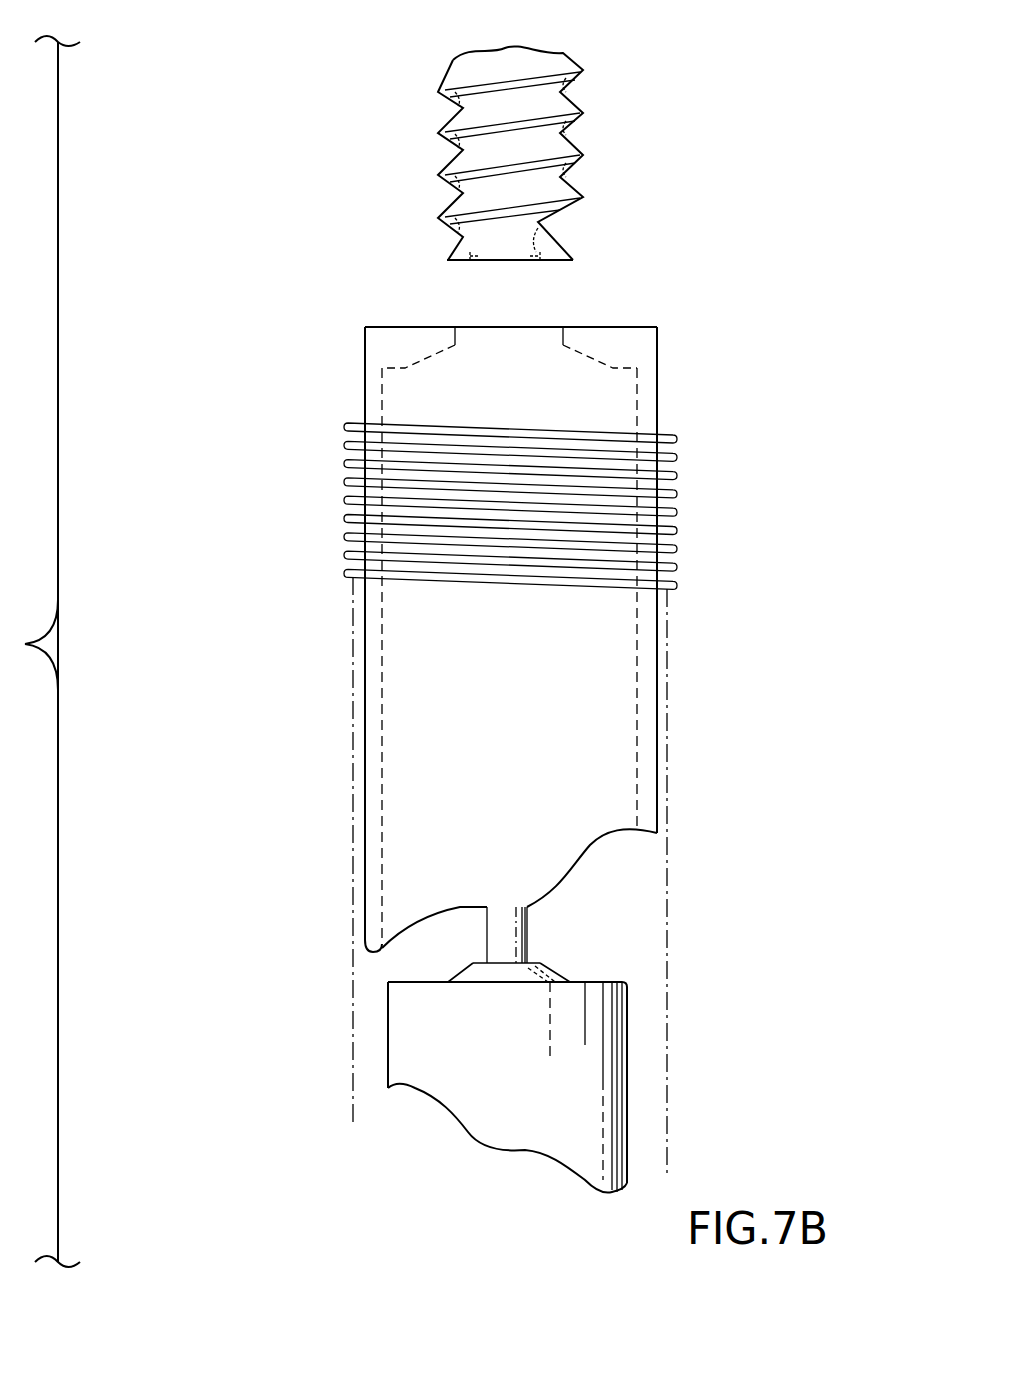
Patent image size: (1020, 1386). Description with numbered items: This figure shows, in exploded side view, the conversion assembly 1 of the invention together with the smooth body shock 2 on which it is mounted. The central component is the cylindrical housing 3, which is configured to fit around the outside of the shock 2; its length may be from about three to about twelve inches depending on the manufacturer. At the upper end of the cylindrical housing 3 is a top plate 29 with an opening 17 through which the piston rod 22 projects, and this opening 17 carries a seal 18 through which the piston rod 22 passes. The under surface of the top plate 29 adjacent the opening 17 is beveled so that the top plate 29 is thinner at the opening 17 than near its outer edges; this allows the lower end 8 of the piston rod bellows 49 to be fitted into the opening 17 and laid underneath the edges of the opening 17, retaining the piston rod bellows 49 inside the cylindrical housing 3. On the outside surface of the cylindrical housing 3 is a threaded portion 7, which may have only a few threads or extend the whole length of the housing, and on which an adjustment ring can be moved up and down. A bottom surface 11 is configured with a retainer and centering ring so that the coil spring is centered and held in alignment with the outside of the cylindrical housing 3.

The conversion assembly 1 is at (41, 651).
The piston rod bellows 49 is at (438, 197).
The lower end of the piston rod bellows 8 is at (470, 262).
The cylindrical housing 3 is at (643, 348).
The opening 17 is at (532, 327).
The top plate 29 is at (604, 327).
The bottom surface 11 is at (613, 367).
The threaded portion 7 is at (348, 442).
The piston rod 22 is at (527, 934).
The seal 18 is at (455, 980).
The smooth body shock 2 is at (388, 1088).